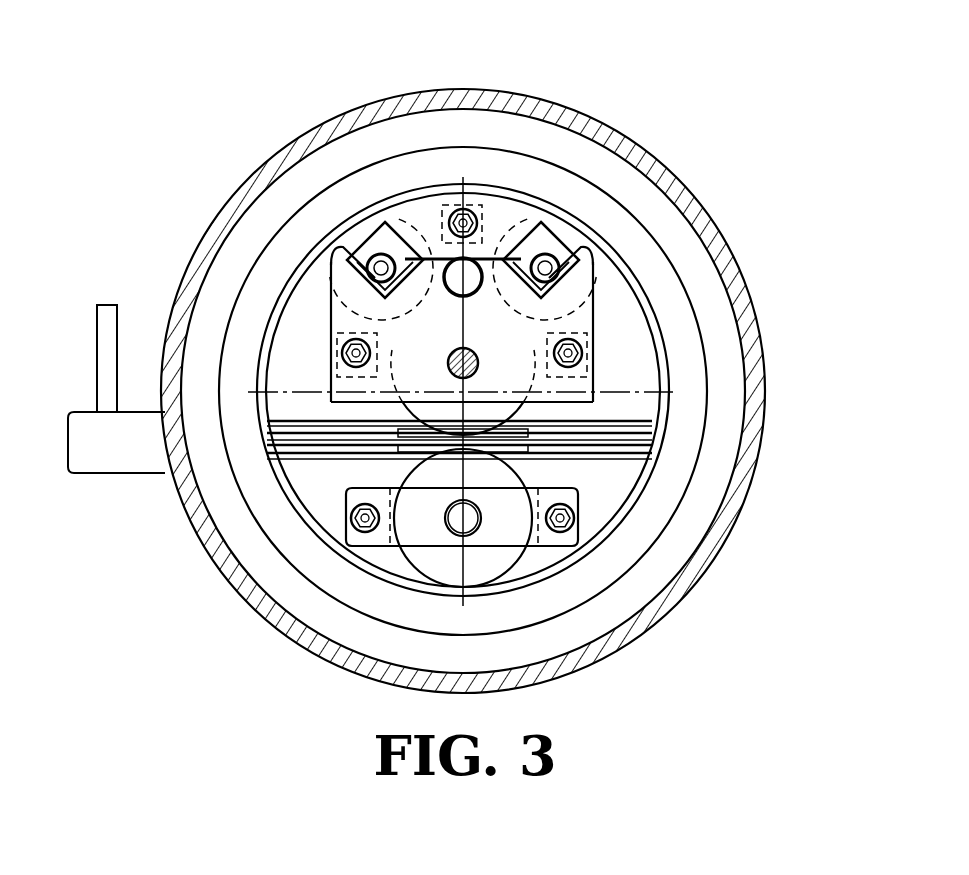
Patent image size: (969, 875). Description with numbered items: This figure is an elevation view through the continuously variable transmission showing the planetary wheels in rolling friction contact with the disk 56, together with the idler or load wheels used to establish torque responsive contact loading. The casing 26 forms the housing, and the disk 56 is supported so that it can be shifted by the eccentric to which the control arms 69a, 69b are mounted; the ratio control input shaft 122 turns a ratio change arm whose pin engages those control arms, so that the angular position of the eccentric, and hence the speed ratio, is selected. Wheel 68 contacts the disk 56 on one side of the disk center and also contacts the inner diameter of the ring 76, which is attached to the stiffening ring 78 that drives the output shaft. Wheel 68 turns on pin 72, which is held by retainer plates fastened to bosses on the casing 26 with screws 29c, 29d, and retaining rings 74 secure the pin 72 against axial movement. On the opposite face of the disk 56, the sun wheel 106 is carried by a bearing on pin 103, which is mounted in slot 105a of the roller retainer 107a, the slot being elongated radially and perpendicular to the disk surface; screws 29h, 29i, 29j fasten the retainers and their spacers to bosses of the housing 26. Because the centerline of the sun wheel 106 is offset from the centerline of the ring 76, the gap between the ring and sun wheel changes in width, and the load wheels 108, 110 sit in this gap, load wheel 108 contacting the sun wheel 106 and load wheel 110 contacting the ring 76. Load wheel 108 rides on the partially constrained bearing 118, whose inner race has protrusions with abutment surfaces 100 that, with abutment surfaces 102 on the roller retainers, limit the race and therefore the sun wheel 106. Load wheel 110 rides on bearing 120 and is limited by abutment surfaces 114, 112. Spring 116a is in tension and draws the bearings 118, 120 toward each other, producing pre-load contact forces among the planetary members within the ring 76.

The casing 26 is at (187, 508).
The disk 56 is at (587, 440).
The wheel 68 is at (293, 603).
The control arm 69a is at (278, 424).
The control arm 69b is at (283, 457).
The pin 72 is at (470, 523).
The retaining rings 74 is at (466, 535).
The ring 76 is at (258, 387).
The stiffening ring 78 is at (290, 541).
The screw 29c is at (355, 523).
The screw 29d is at (562, 522).
The screw 29h is at (355, 352).
The screw 29i is at (458, 257).
The screw 29j is at (588, 353).
The abutment surfaces 100 is at (553, 243).
The abutment surfaces 102 is at (562, 285).
The pin 103 is at (478, 373).
The slot 105a is at (478, 352).
The sun wheel 106 is at (333, 310).
The roller retainer 107a is at (427, 223).
The load wheel 108 is at (686, 194).
The load wheel 110 is at (358, 240).
The abutment surface 112 is at (433, 413).
The abutment surface 114 is at (360, 260).
The spring 116a is at (543, 254).
The bearing 118 is at (591, 248).
The bearing 120 is at (381, 255).
The control shaft 122 is at (108, 318).